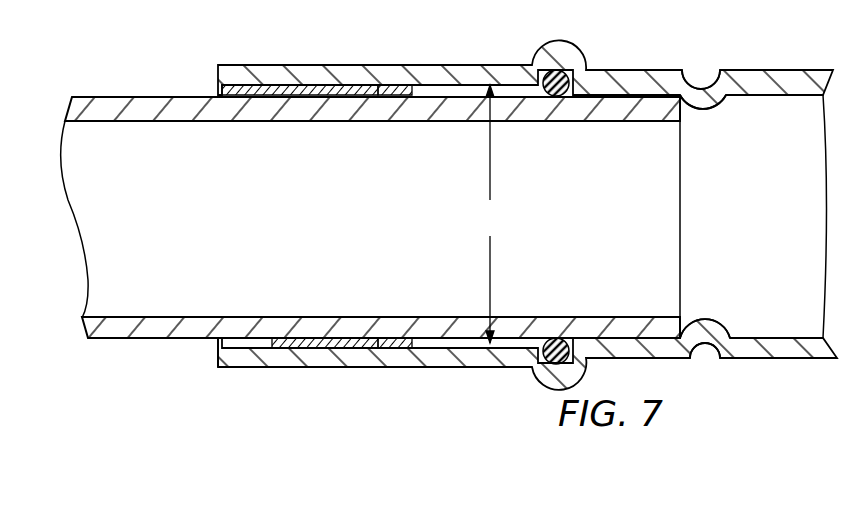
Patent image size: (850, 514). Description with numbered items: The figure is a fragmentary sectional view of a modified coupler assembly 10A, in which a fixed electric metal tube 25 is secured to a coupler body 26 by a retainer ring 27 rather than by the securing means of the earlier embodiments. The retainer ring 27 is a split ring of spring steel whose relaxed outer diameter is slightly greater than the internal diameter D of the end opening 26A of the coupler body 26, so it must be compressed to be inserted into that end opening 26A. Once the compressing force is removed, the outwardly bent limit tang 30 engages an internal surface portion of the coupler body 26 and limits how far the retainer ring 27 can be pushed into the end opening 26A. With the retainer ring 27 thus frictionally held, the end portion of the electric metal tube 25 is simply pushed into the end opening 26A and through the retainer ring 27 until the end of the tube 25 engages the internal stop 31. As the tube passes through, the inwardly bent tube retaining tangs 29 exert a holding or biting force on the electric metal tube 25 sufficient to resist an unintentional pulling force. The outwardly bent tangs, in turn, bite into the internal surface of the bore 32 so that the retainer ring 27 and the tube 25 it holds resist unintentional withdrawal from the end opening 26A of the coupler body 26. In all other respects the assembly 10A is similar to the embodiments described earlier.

The coupler assembly 10A is at (449, 214).
The electric metal tube 25 is at (117, 340).
The coupler body 26 is at (476, 367).
The end opening 26A is at (218, 360).
The retainer ring 27 is at (267, 88).
The tube retaining tangs 29 is at (297, 352).
The limit tang 30 is at (372, 88).
The internal stop 31 is at (707, 318).
The bore 32 is at (448, 342).
The internal diameter D is at (492, 214).